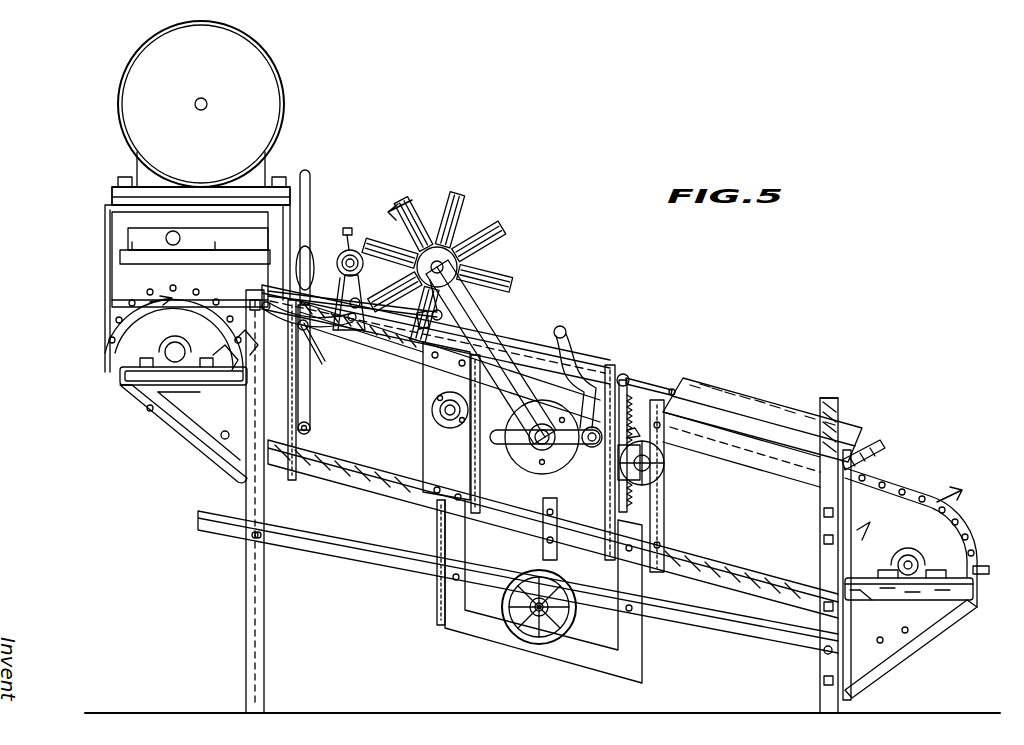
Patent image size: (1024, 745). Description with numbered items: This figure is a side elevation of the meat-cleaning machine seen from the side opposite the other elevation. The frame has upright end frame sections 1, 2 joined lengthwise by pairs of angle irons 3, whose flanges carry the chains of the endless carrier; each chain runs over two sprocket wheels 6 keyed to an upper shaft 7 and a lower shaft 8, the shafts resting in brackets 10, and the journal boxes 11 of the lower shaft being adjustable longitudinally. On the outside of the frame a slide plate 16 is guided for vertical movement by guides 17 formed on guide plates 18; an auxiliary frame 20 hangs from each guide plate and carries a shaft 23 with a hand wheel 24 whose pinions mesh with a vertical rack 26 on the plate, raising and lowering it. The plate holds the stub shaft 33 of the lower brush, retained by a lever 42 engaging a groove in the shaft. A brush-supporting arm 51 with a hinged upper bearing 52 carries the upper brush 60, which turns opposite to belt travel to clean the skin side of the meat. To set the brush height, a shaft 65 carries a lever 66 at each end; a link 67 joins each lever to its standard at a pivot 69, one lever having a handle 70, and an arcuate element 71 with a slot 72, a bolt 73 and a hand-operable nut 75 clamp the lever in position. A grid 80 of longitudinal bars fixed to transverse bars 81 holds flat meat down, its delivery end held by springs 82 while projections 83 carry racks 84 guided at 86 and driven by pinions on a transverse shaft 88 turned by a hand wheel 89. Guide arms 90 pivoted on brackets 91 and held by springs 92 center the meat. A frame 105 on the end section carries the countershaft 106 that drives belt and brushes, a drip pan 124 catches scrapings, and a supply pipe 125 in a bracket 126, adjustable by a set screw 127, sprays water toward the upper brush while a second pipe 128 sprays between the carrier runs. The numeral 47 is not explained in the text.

The end frame section 1 is at (246, 628).
The end frame section 2 is at (820, 683).
The angle irons 3 is at (765, 455).
The sprocket wheels 6 is at (130, 332).
The upper shaft 7 is at (176, 350).
The lower shaft 8 is at (912, 562).
The brackets 10 is at (176, 433).
The journal boxes 11 is at (910, 555).
The plates 16 is at (588, 355).
The guides 17 is at (480, 499).
The guide plates 18 is at (428, 446).
The auxiliary frame 20 is at (590, 658).
The shaft 23 is at (538, 618).
The hand wheel 24 is at (520, 638).
The vertical racks 26 is at (545, 556).
The stub shaft 33 is at (541, 450).
The lever 42 is at (500, 444).
The curved link 47 is at (575, 377).
The brush-supporting arm 51 is at (518, 305).
The upper bearing 52 is at (437, 246).
The upper brush 60 is at (455, 200).
The shaft 65 is at (310, 426).
The lever 66 is at (310, 381).
The link 67 is at (395, 338).
The pivotal attachment 69 is at (443, 316).
The handle 70 is at (312, 176).
The arcuate element 71 is at (342, 336).
The arcuate slot 72 is at (242, 342).
The bolt 73 is at (283, 390).
The hand-operable nut 75 is at (318, 300).
The grid 80 is at (652, 382).
The transverse bars 81 is at (300, 252).
The springs 82 is at (300, 284).
The projections 83 is at (624, 376).
The rack 84 is at (650, 385).
The rack guide 86 is at (640, 482).
The transverse shaft 88 is at (650, 463).
The hand wheel 89 is at (668, 462).
The guide arms 90 is at (765, 400).
The bracket 91 is at (832, 396).
The spring 92 is at (862, 438).
The frame 105 is at (105, 268).
The countershaft 106 is at (166, 238).
The drip pan 124 is at (370, 565).
The supply pipe 125 is at (356, 256).
The bracket 126 is at (342, 258).
The set screw 127 is at (347, 228).
The pipe 128 is at (445, 410).